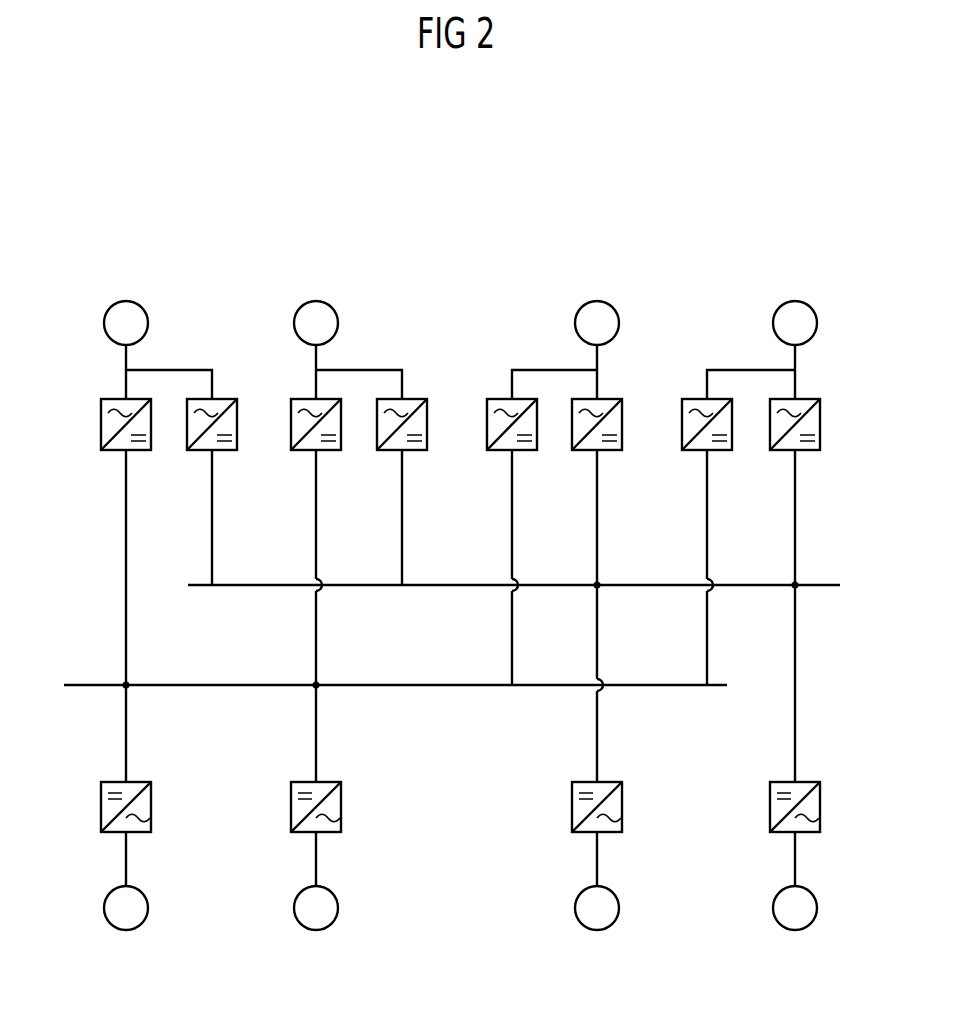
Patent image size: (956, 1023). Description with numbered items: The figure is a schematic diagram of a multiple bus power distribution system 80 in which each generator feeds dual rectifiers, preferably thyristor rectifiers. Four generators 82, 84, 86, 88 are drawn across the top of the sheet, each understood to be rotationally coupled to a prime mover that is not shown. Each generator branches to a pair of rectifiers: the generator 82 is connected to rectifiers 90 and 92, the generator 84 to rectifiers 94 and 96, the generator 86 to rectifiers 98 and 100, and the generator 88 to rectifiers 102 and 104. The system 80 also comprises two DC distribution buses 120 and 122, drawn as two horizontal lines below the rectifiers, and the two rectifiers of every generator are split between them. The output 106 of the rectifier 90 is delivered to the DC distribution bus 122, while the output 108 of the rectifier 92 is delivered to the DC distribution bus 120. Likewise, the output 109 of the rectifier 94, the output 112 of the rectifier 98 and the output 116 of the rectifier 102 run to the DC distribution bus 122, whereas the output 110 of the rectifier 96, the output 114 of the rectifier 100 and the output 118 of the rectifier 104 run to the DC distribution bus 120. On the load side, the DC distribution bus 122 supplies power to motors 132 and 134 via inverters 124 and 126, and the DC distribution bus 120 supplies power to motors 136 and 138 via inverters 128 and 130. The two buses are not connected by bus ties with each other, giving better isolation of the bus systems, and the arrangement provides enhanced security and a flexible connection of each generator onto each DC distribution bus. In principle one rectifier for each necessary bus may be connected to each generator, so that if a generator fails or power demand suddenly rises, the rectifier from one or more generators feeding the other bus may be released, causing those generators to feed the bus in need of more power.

The power distribution system 80 is at (160, 158).
The generator 82 is at (119, 301).
The generator 84 is at (309, 301).
The generator 86 is at (604, 301).
The generator 88 is at (802, 301).
The rectifier 90 is at (111, 451).
The rectifier 92 is at (196, 451).
The rectifier 94 is at (300, 451).
The rectifier 96 is at (386, 451).
The rectifier 98 is at (534, 451).
The rectifier 100 is at (612, 451).
The rectifier 102 is at (723, 451).
The rectifier 104 is at (804, 451).
The output 106 is at (126, 624).
The output 108 is at (212, 550).
The output 109 is at (316, 550).
The output 110 is at (402, 550).
The output 112 is at (512, 550).
The output 114 is at (597, 550).
The output 116 is at (707, 550).
The output 118 is at (795, 524).
The DC distribution bus 120 is at (445, 586).
The DC distribution bus 122 is at (406, 686).
The inverter 124 is at (108, 782).
The inverter 126 is at (298, 782).
The inverter 128 is at (612, 782).
The inverter 130 is at (810, 782).
The motor 132 is at (116, 929).
The motor 134 is at (307, 929).
The motor 136 is at (587, 929).
The motor 138 is at (782, 929).